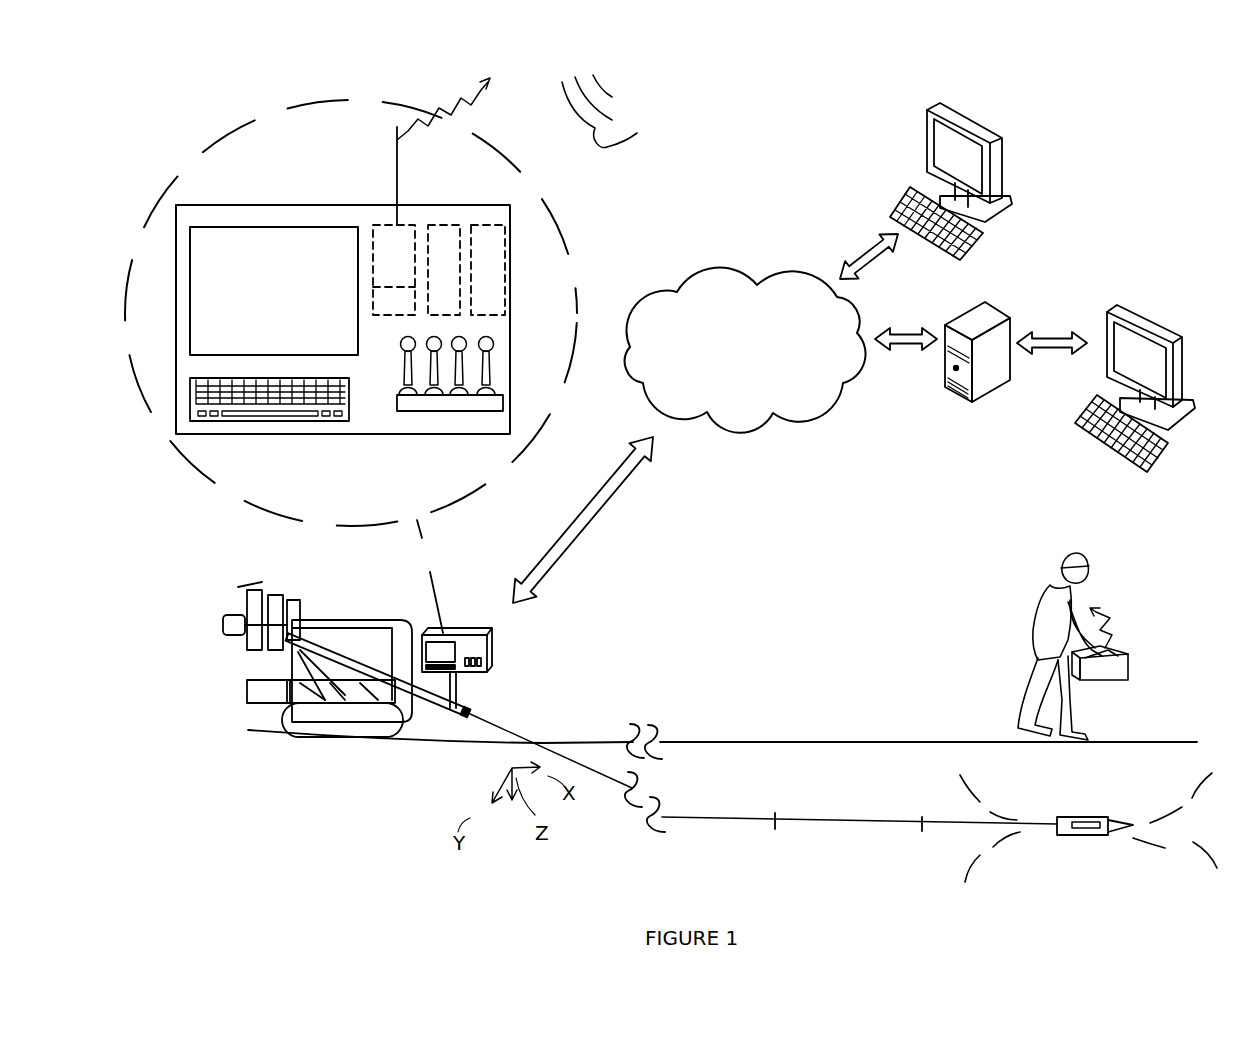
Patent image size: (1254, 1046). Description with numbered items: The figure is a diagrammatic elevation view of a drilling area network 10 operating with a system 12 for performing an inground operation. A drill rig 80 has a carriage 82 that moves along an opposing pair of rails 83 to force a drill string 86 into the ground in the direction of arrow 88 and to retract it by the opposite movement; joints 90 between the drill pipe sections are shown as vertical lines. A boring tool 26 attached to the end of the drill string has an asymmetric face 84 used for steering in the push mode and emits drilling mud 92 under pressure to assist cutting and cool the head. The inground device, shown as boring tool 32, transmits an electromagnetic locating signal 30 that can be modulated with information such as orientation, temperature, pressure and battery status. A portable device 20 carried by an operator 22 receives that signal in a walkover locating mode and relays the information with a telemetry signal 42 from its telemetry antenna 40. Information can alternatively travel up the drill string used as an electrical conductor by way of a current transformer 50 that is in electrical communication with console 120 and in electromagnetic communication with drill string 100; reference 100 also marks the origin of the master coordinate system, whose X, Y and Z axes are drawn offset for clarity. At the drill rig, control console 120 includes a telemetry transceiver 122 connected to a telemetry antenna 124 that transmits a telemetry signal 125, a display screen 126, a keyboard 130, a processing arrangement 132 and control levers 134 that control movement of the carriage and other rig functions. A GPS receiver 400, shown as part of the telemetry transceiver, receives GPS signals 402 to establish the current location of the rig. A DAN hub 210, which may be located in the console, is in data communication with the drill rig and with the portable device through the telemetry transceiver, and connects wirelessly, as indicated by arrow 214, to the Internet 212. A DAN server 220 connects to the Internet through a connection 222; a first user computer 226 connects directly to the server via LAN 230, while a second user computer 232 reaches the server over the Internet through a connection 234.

The drilling area network 10 is at (767, 114).
The system for performing an inground operation 12 is at (633, 601).
The portable device 20 is at (1114, 690).
The operator 22 is at (1052, 590).
The boring tool 26 is at (1076, 805).
The electromagnetic locating signal 30 is at (968, 784).
The boring tool 32 is at (1100, 816).
The telemetry antenna 40 is at (1130, 655).
The telemetry signal 42 is at (1118, 620).
The current transformer 50 is at (473, 712).
The drill rig 80 is at (338, 749).
The carriage 82 is at (300, 610).
The rails 83 is at (447, 723).
The asymmetric face 84 is at (1120, 818).
The drill string 86 is at (843, 828).
The arrow 88 is at (263, 563).
The joints 90 is at (777, 814).
The drilling mud 92 is at (1133, 838).
The origin of the master coordinate system 100 is at (545, 741).
The control console 120 is at (514, 258).
The telemetry transceiver 122 is at (374, 232).
The telemetry antenna 124 is at (401, 159).
The telemetry signal 125 is at (509, 117).
The display screen 126 is at (202, 228).
The keyboard 130 is at (263, 423).
The processing arrangement 132 is at (440, 228).
The control levers 134 is at (424, 425).
The DAN hub 210 is at (488, 223).
The Internet 212 is at (795, 423).
The arrow 214 is at (600, 518).
The DAN server 220 is at (992, 312).
The connection 222 is at (906, 331).
The first user computer 226 is at (1130, 313).
The LAN 230 is at (1046, 336).
The second user computer 232 is at (992, 126).
The connection 234 is at (864, 250).
The GPS receiver 400 is at (389, 317).
The GPS signals 402 is at (621, 112).